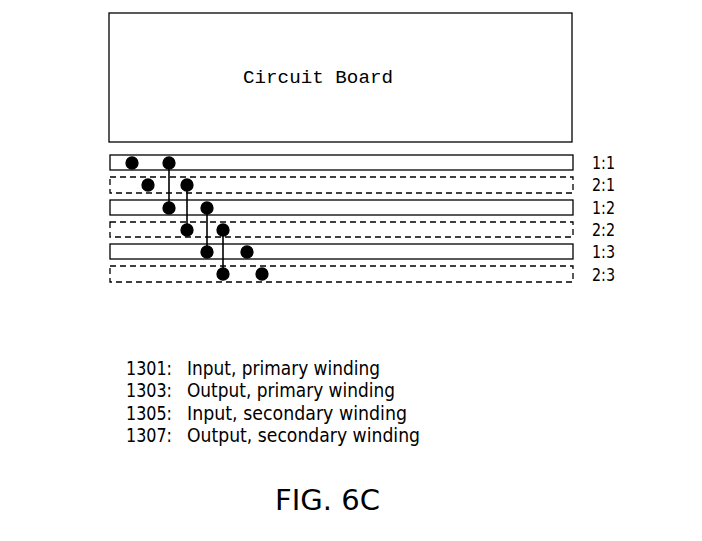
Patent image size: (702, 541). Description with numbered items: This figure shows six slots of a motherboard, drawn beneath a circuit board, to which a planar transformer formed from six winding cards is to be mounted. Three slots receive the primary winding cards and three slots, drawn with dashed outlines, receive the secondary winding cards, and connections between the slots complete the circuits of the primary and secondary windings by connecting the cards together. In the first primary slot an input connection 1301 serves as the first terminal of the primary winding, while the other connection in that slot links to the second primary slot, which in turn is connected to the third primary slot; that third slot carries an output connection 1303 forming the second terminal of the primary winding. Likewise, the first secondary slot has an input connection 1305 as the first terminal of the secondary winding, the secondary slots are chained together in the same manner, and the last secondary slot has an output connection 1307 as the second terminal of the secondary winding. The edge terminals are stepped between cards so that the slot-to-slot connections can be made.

The input connection 1301 is at (126, 163).
The output connection 1303 is at (253, 255).
The input connection 1305 is at (142, 185).
The output connection 1307 is at (262, 280).